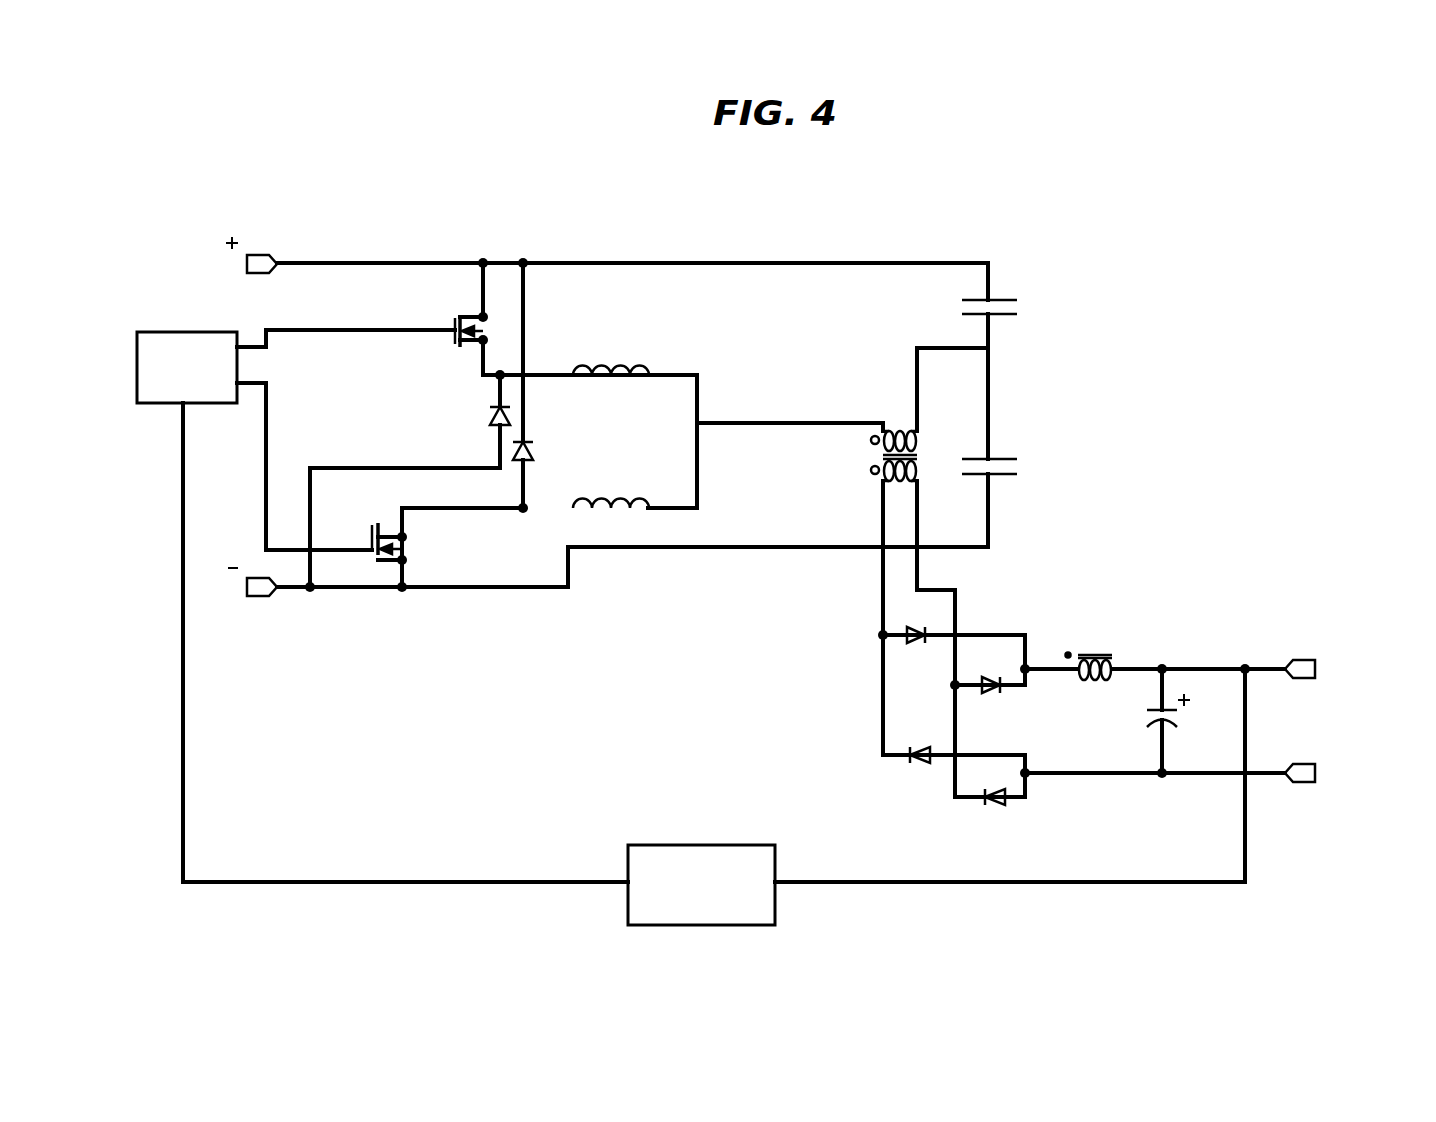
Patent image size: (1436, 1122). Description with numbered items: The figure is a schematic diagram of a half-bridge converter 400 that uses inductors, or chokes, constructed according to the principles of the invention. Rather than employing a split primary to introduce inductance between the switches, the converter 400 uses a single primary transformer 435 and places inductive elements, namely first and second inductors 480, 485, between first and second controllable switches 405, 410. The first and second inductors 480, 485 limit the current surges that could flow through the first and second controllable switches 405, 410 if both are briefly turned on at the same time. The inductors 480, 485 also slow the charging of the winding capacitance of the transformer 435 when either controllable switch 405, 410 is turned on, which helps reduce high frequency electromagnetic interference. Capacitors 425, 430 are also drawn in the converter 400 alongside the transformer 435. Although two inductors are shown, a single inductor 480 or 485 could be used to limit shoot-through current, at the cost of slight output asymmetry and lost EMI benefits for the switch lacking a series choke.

The half-bridge converter 400 is at (1172, 259).
The first controllable switch 405 is at (455, 317).
The second controllable switch 410 is at (372, 538).
The first capacitor 425 is at (1017, 300).
The second capacitor 430 is at (1017, 459).
The single primary transformer 435 is at (871, 470).
The first inductor 480 is at (625, 369).
The second inductor 485 is at (620, 502).